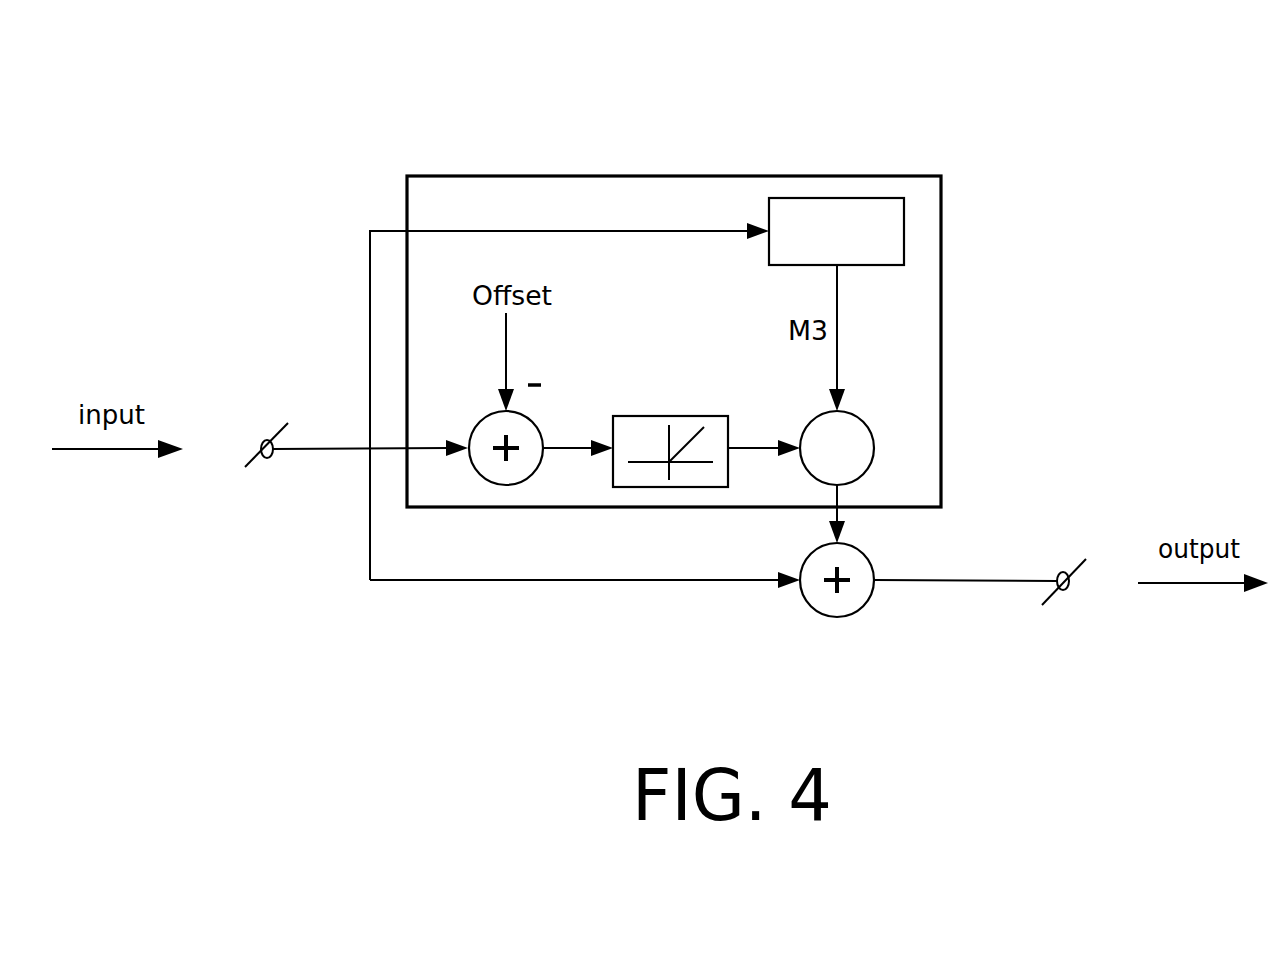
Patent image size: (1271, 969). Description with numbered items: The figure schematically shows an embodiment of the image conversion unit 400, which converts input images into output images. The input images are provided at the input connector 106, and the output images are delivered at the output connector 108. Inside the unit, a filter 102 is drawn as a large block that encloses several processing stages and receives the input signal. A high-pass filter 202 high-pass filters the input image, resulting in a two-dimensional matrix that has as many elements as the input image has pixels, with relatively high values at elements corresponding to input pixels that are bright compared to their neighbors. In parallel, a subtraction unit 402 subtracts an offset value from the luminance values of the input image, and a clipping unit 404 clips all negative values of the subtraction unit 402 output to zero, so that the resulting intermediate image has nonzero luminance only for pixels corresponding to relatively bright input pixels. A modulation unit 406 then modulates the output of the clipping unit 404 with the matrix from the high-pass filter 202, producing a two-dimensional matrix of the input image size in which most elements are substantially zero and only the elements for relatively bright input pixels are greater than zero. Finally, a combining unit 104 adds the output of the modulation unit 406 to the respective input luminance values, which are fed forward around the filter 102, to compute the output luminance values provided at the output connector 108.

The image conversion unit 400 is at (728, 41).
The filter 102 is at (933, 200).
The high-pass filter 202 is at (799, 207).
The subtraction unit 402 is at (507, 480).
The clipping unit 404 is at (707, 482).
The modulation unit 406 is at (865, 450).
The combining unit 104 is at (832, 605).
The input connector 106 is at (262, 438).
The output connector 108 is at (1068, 590).